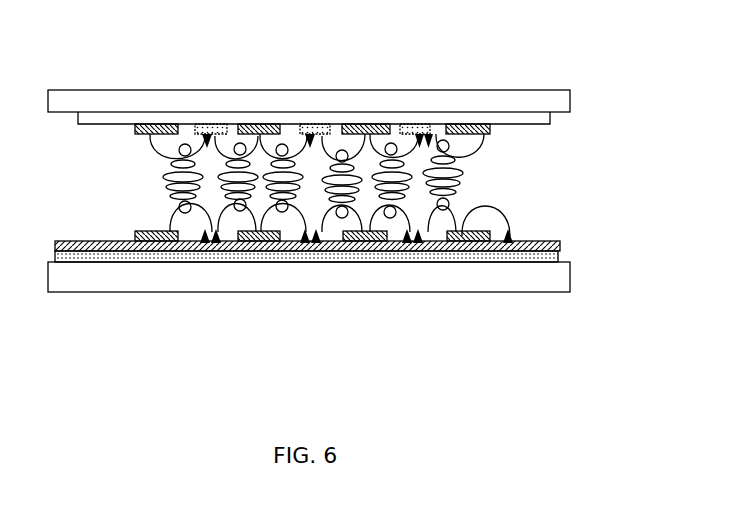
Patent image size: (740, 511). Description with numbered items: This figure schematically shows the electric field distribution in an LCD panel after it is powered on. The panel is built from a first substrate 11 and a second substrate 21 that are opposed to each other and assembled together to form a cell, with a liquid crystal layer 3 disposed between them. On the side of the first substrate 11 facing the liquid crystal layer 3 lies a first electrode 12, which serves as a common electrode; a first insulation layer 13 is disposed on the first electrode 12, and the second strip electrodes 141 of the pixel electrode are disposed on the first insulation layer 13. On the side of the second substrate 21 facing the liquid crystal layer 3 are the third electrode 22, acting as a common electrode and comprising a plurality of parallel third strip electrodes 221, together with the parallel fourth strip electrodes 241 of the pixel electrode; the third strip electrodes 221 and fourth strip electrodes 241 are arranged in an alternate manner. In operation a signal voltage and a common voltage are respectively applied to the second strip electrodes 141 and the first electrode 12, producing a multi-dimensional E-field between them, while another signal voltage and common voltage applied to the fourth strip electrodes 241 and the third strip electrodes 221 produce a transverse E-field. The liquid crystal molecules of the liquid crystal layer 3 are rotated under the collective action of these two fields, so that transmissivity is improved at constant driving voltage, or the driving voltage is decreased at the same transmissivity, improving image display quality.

The first substrate 11 is at (110, 278).
The first electrode 12 is at (335, 253).
The first insulation layer 13 is at (462, 243).
The second strip electrodes 141 is at (172, 238).
The second substrate 21 is at (98, 102).
The third electrode 22 is at (490, 118).
The third strip electrodes 221 is at (310, 125).
The fourth strip electrodes 241 is at (157, 123).
The liquid crystal layer 3 is at (462, 172).